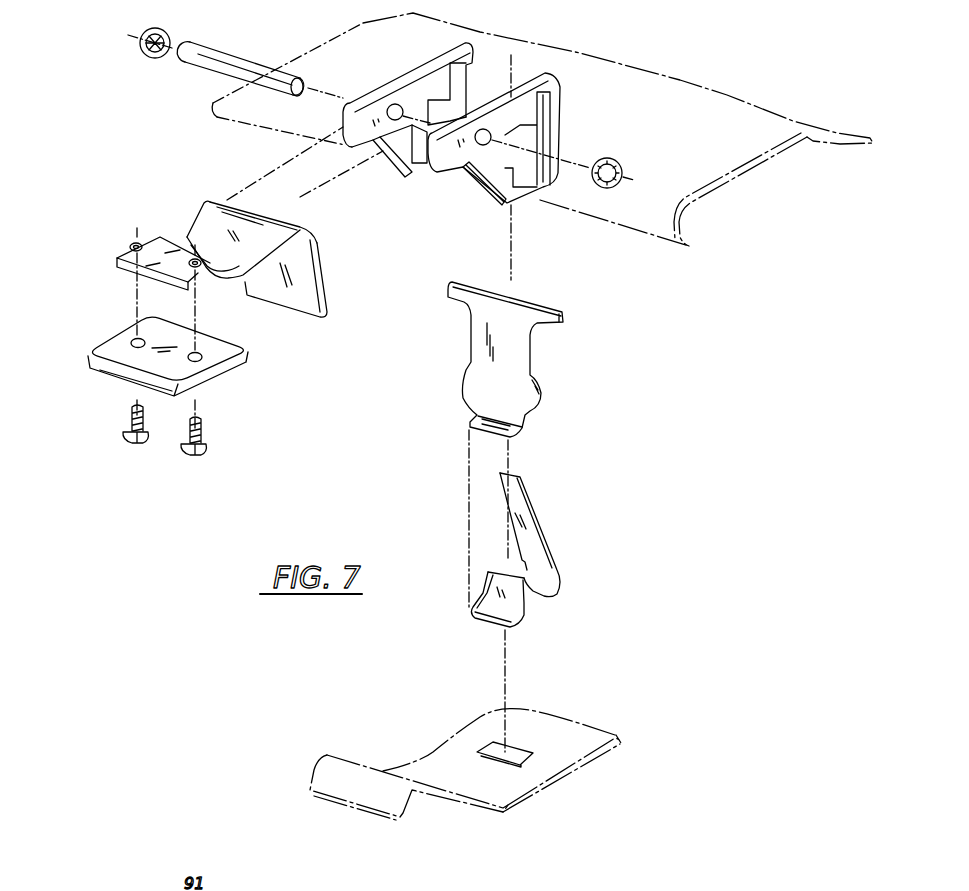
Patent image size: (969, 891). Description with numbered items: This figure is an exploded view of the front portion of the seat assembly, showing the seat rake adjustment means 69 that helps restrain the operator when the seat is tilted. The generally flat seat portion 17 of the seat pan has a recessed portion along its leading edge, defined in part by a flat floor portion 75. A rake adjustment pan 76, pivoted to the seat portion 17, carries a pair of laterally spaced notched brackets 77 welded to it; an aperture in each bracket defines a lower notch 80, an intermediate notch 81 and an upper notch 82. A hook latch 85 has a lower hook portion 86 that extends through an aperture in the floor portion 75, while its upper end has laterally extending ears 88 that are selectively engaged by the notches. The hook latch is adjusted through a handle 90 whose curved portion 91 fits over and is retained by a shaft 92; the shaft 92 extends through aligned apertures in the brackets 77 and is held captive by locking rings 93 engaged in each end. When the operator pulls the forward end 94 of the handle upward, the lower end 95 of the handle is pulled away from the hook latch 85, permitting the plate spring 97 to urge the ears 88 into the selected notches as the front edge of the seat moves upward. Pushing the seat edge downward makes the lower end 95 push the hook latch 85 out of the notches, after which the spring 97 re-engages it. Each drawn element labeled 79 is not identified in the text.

The seat portion 17 is at (617, 747).
The seat rake adjustment means 69 is at (334, 476).
The floor portion 75 is at (496, 758).
The rake adjustment pan 76 is at (650, 228).
The notched brackets 77 is at (546, 72).
The bracket tab 79 is at (440, 100).
The lower notch 80 is at (495, 197).
The intermediate notch 81 is at (477, 177).
The upper notch 82 is at (551, 100).
The hook latch 85 is at (519, 365).
The lower hook portion 86 is at (517, 431).
The laterally extending ears 88 is at (460, 298).
The handle 90 is at (245, 248).
The curved portion 91 is at (301, 224).
The shaft 92 is at (218, 53).
The locking rings 93 is at (151, 30).
The forward end 94 is at (92, 367).
The lower end 95 is at (328, 303).
The plate spring 97 is at (563, 588).